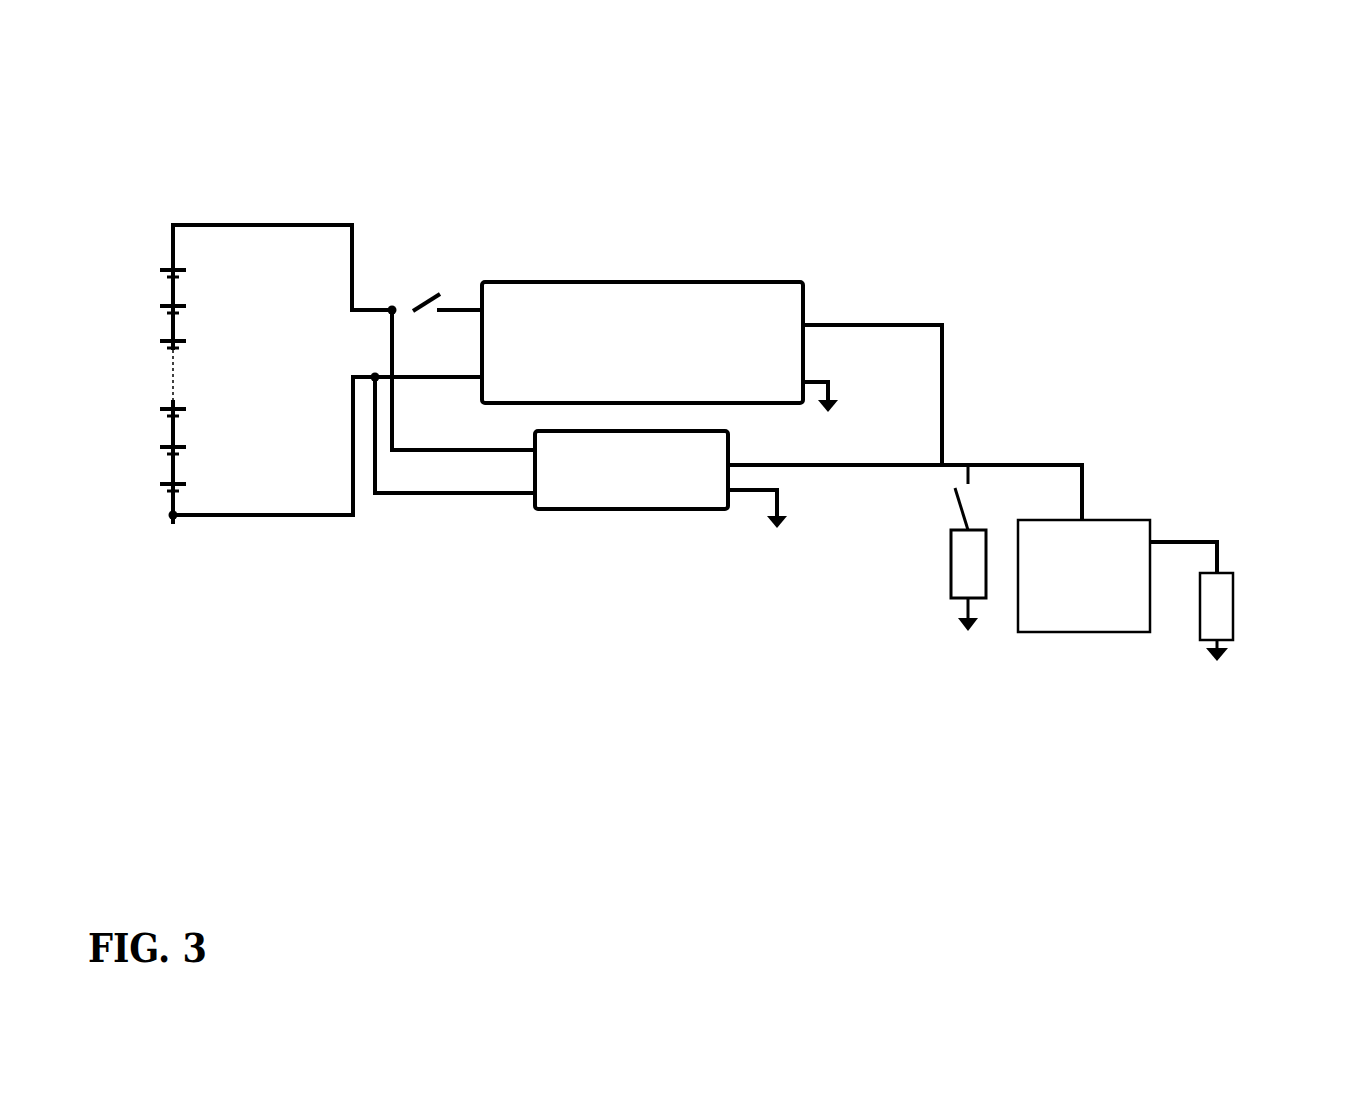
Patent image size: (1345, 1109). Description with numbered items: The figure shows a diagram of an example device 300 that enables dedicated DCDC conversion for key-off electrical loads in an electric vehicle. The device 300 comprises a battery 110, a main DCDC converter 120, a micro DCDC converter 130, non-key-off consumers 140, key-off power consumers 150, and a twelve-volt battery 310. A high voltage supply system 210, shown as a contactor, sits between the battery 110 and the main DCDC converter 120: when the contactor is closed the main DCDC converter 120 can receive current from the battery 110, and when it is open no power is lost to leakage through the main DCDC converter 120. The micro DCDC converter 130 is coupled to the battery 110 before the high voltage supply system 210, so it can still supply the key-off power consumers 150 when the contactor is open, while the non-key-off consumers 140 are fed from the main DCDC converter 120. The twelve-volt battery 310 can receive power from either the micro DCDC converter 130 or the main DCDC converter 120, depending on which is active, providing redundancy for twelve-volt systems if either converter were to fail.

The device 300 is at (166, 88).
The battery 110 is at (168, 375).
The high voltage supply system 210 is at (414, 303).
The main DCDC converter 120 is at (541, 275).
The micro DCDC converter 130 is at (604, 512).
The non-key-off consumers 140 is at (943, 549).
The 12V battery 310 is at (1104, 511).
The key-off power consumers 150 is at (1244, 604).